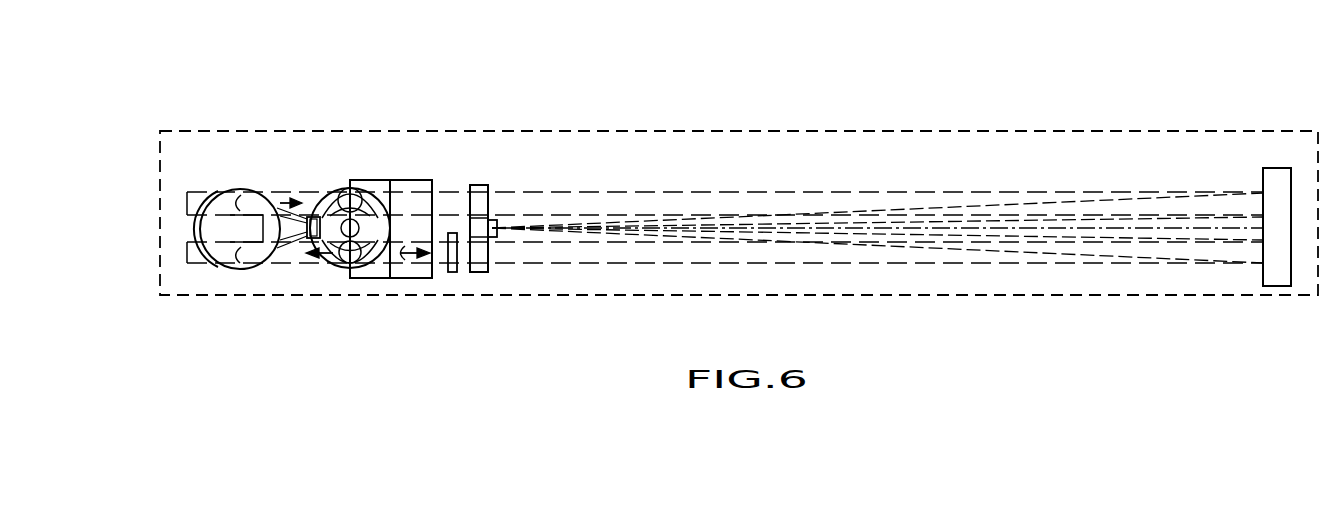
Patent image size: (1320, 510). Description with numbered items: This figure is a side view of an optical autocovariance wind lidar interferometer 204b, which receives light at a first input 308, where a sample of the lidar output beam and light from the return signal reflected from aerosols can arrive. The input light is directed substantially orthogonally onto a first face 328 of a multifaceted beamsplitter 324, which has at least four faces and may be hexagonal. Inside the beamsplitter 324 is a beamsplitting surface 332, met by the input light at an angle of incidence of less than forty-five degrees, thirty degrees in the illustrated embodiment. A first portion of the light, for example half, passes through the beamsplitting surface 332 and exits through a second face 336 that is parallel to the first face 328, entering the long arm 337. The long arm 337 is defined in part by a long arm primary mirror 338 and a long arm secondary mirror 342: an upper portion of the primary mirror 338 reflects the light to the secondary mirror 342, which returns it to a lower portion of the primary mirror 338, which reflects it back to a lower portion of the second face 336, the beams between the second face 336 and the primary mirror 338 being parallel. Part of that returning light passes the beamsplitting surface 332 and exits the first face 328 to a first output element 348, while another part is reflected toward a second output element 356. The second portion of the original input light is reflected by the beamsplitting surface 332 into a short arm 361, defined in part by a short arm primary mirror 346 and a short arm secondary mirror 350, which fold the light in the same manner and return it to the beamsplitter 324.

The interferometer 204b is at (532, 135).
The first input 308 is at (200, 201).
The multifaceted beamsplitter 324 is at (390, 180).
The first face 328 is at (350, 188).
The beamsplitting surface 332 is at (383, 275).
The second face 336 is at (432, 180).
The long arm 337 is at (825, 192).
The long arm primary mirror 338 is at (1263, 172).
The long arm secondary mirror 342 is at (495, 220).
The short arm primary mirror 346 is at (212, 260).
The first output element 348 is at (278, 258).
The short arm secondary mirror 350 is at (311, 217).
The second output element 356 is at (430, 258).
The short arm 361 is at (245, 273).